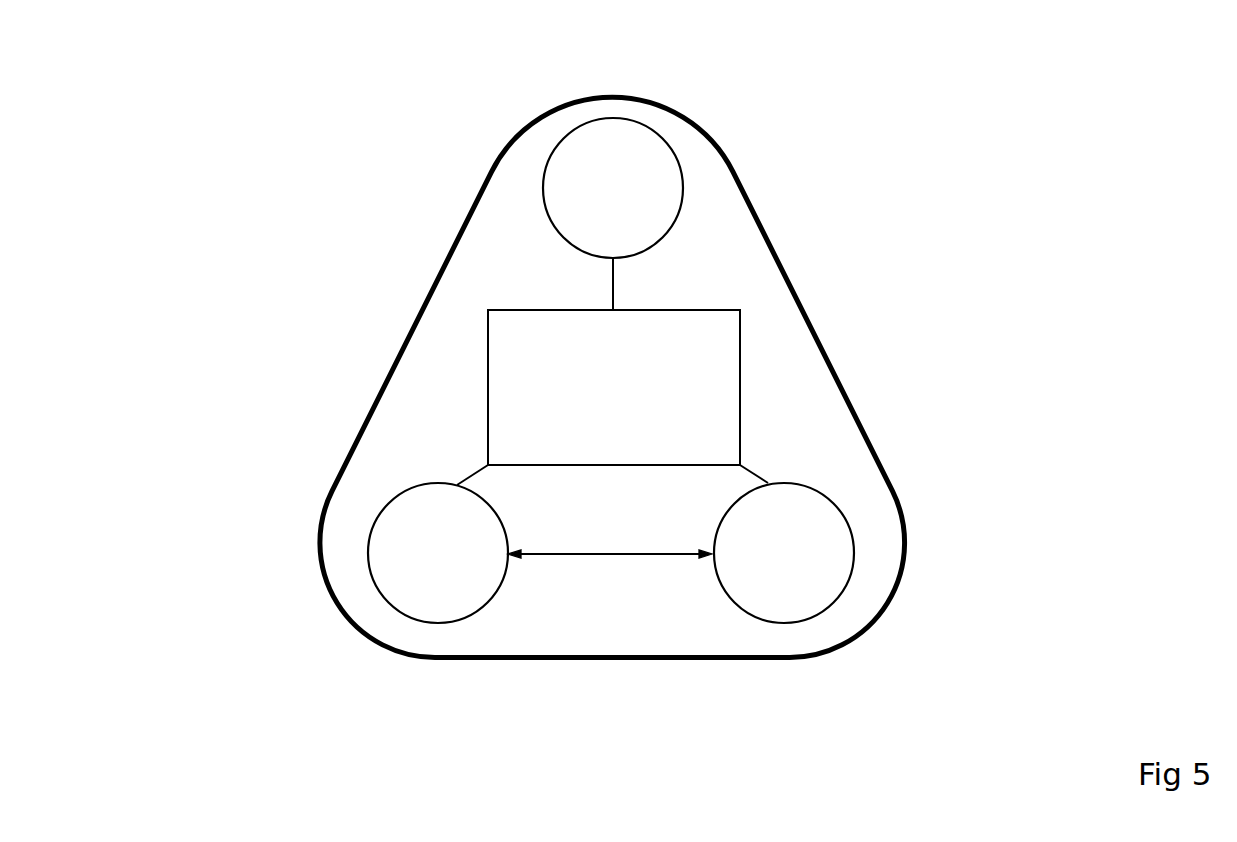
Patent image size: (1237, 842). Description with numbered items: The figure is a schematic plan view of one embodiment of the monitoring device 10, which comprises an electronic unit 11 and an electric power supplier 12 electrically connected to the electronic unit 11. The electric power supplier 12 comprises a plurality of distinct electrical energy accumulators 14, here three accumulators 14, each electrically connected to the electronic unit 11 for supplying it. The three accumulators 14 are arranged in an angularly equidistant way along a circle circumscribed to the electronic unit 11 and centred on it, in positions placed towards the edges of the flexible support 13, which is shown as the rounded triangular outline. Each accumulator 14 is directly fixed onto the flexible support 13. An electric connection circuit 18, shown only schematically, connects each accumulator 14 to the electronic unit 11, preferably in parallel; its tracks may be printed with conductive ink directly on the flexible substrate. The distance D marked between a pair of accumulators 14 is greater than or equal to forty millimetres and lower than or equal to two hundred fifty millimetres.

The monitoring device 10 is at (243, 143).
The electronic unit 11 is at (633, 408).
The electric power supplier 12 is at (690, 143).
The flexible support 13 is at (400, 391).
The electrical energy accumulator 14 is at (633, 208).
The electric connection circuit 18 is at (630, 284).